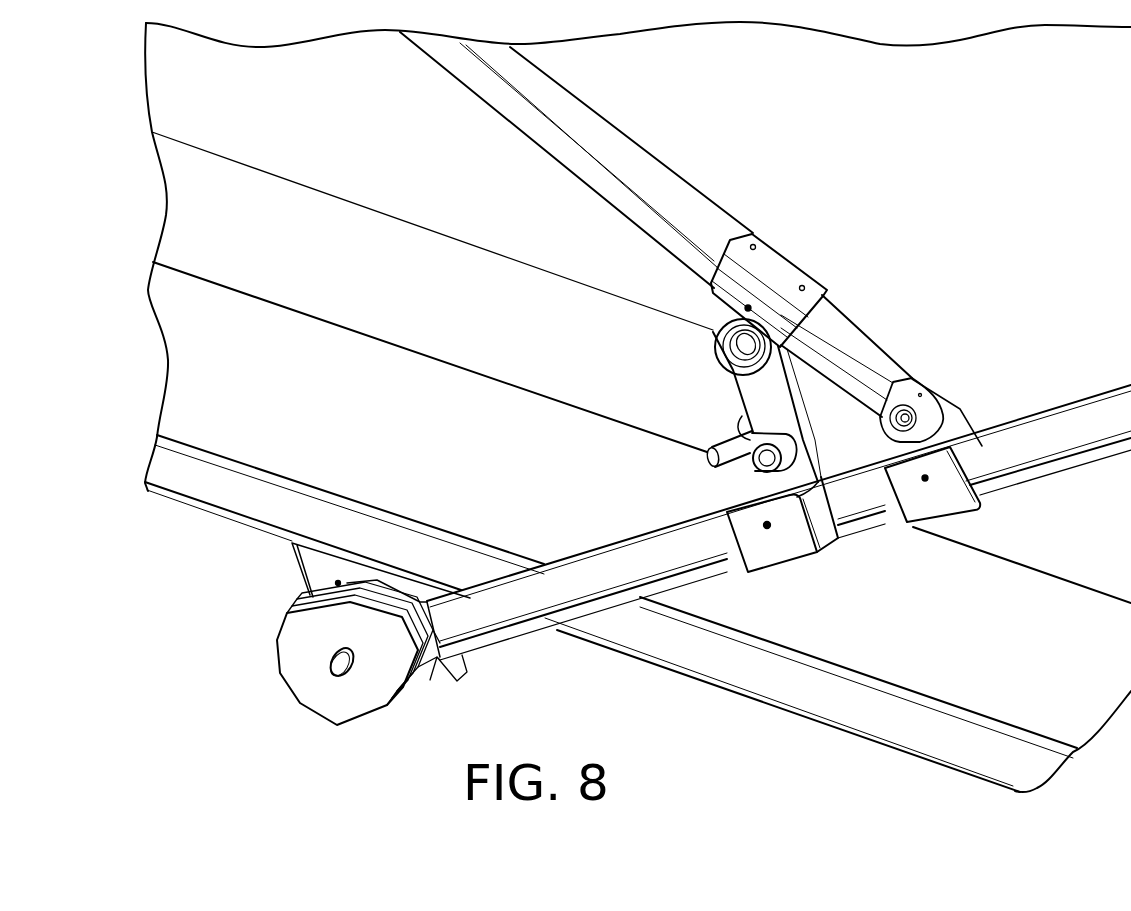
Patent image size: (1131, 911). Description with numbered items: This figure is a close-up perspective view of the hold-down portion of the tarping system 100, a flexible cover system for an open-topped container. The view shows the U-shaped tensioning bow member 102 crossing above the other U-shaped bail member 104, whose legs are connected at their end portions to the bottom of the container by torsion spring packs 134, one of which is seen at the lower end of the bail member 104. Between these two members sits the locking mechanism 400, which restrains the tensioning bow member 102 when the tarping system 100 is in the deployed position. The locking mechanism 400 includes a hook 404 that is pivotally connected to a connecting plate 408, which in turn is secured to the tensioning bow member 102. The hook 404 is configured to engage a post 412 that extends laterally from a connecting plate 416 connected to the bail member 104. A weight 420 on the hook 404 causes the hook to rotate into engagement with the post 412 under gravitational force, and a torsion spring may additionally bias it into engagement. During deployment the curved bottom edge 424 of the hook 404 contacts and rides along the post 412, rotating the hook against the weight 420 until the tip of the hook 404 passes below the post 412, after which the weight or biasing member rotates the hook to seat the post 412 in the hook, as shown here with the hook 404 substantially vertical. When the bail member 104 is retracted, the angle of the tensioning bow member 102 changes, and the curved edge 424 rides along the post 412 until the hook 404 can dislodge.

The tarping system 100 is at (637, 689).
The tensioning bow member 102 is at (598, 117).
The bail member 104 is at (1083, 462).
The torsion spring packs 134 is at (278, 630).
The locking mechanism 400 is at (730, 393).
The hook 404 is at (800, 410).
The connecting plate 408 is at (773, 247).
The post 412 is at (703, 458).
The connecting plate 416 is at (797, 565).
The weight 420 is at (802, 447).
The curved bottom edge 424 is at (743, 470).